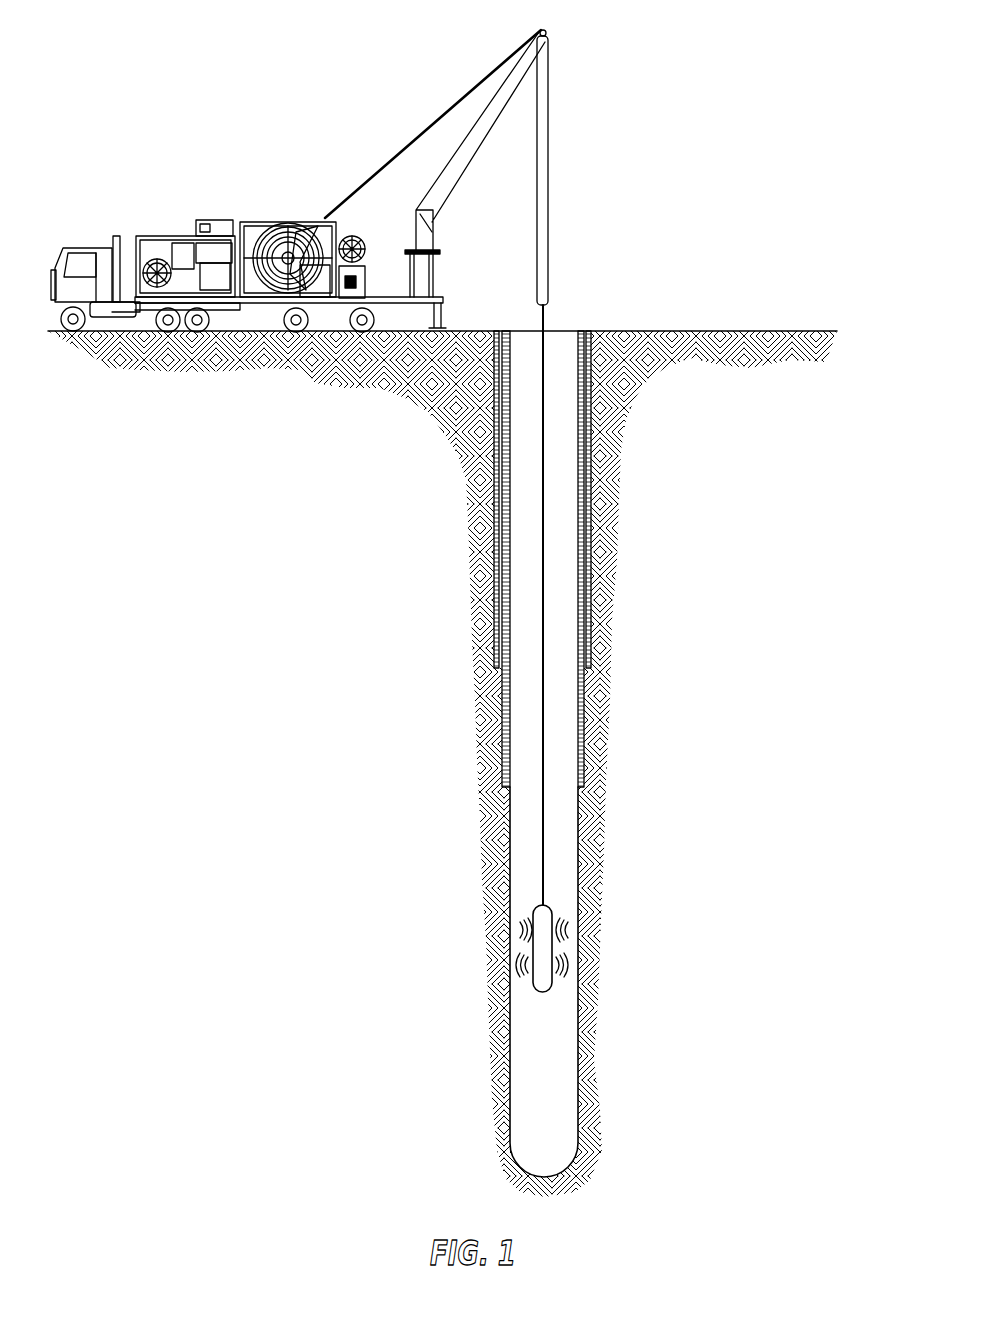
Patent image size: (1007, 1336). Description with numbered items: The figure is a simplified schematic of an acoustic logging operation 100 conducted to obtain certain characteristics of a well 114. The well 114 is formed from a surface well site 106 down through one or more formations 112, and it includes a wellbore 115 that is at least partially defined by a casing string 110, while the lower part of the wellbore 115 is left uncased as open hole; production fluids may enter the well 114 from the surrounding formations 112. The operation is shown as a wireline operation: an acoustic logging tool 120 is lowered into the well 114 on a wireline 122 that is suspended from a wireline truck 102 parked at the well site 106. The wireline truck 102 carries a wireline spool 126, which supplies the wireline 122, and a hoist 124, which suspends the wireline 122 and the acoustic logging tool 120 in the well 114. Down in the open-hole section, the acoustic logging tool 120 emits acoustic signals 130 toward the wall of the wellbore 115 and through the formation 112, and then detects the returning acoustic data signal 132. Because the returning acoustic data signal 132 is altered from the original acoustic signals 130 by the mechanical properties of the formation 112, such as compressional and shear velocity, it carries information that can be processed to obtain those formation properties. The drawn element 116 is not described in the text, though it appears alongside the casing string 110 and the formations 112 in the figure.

The acoustic logging operation 100 is at (714, 52).
The wireline truck 102 is at (175, 226).
The surface well site 106 is at (605, 330).
The casing string 110 is at (497, 548).
The formations 112 is at (598, 683).
The well 114 is at (562, 453).
The wellbore 115 is at (505, 815).
The cement 116 is at (595, 553).
The acoustic logging tool 120 is at (555, 982).
The wireline 122 is at (548, 810).
The hoist 124 is at (548, 72).
The wireline spool 126 is at (268, 226).
The acoustic signals 130 is at (570, 966).
The acoustic data signal 132 is at (568, 928).